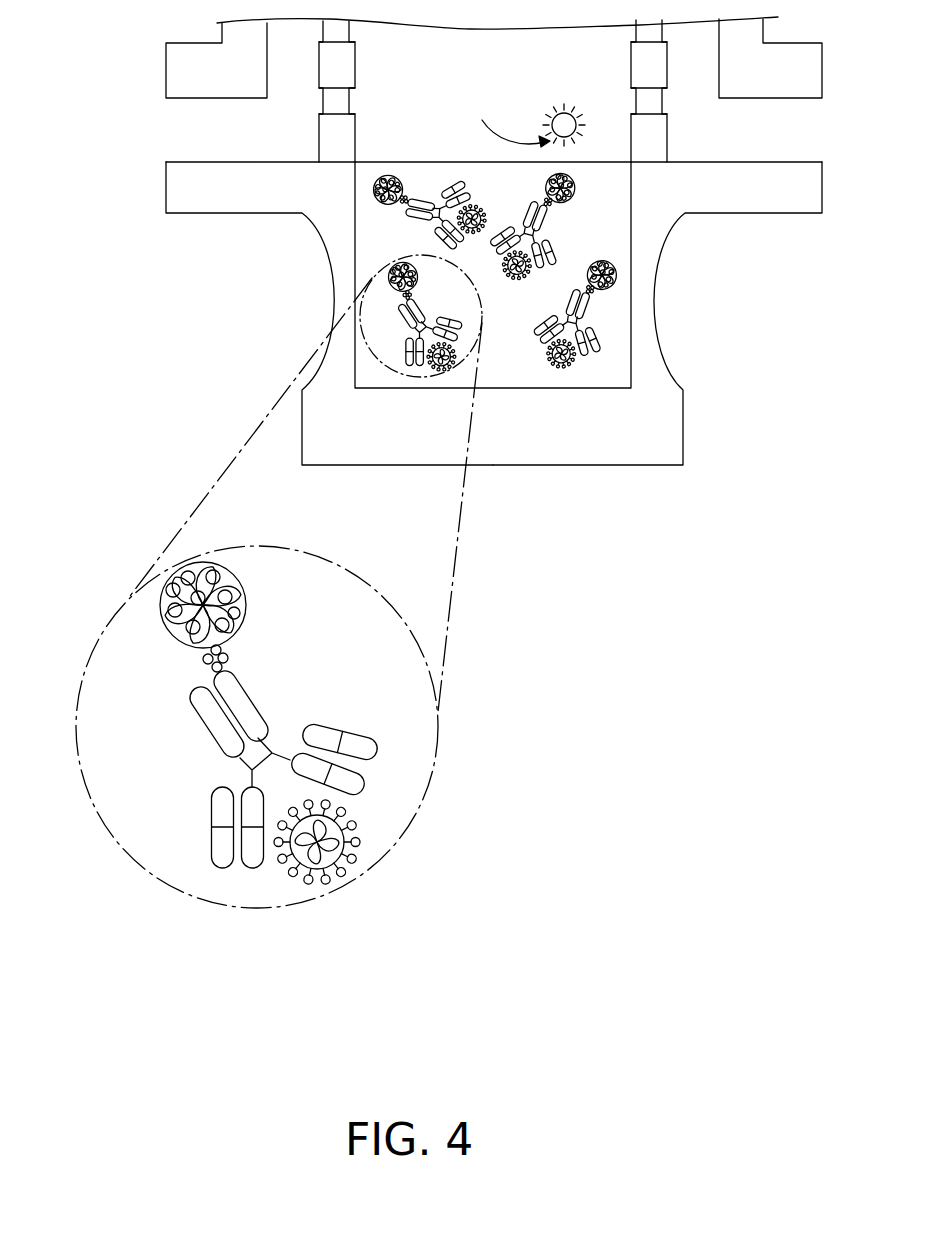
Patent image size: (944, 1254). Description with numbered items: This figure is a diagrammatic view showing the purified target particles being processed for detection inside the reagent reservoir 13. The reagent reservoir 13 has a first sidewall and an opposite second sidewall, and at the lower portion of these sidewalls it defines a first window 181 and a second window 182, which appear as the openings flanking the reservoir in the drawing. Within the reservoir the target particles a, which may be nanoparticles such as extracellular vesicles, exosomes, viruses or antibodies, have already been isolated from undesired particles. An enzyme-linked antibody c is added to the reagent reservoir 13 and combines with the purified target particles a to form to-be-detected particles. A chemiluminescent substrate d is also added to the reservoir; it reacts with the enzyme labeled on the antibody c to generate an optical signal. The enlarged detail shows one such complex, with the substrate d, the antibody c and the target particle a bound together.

The reagent reservoir 13 is at (600, 220).
The first window 181 is at (333, 297).
The second window 182 is at (663, 359).
The chemiluminescent substrate d is at (182, 588).
The enzyme-linked antibody c is at (290, 758).
The target particles a is at (338, 838).